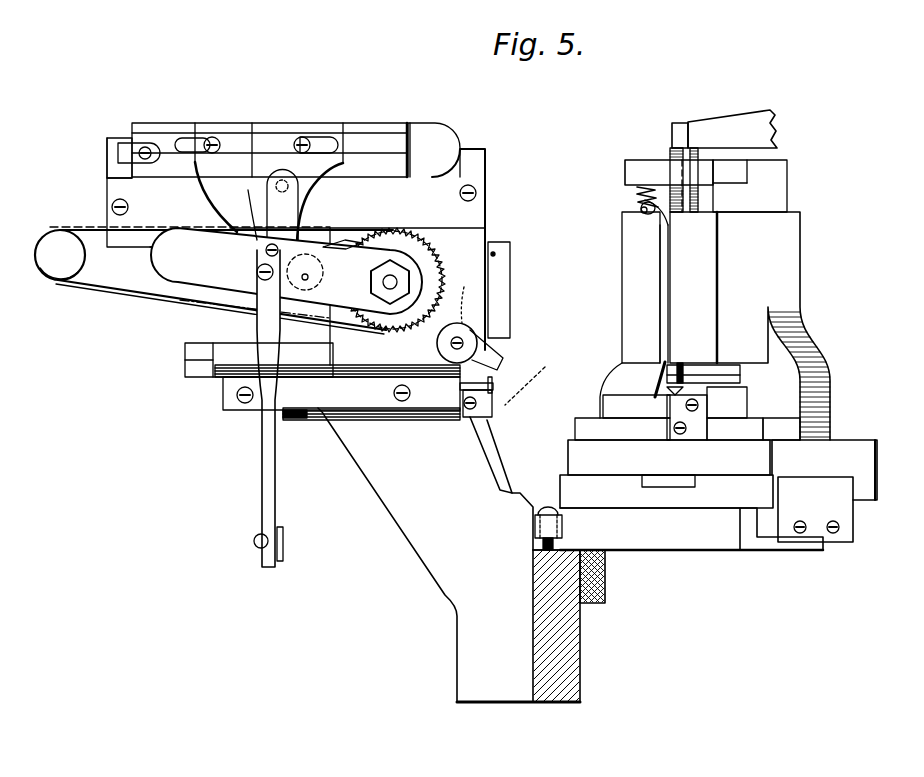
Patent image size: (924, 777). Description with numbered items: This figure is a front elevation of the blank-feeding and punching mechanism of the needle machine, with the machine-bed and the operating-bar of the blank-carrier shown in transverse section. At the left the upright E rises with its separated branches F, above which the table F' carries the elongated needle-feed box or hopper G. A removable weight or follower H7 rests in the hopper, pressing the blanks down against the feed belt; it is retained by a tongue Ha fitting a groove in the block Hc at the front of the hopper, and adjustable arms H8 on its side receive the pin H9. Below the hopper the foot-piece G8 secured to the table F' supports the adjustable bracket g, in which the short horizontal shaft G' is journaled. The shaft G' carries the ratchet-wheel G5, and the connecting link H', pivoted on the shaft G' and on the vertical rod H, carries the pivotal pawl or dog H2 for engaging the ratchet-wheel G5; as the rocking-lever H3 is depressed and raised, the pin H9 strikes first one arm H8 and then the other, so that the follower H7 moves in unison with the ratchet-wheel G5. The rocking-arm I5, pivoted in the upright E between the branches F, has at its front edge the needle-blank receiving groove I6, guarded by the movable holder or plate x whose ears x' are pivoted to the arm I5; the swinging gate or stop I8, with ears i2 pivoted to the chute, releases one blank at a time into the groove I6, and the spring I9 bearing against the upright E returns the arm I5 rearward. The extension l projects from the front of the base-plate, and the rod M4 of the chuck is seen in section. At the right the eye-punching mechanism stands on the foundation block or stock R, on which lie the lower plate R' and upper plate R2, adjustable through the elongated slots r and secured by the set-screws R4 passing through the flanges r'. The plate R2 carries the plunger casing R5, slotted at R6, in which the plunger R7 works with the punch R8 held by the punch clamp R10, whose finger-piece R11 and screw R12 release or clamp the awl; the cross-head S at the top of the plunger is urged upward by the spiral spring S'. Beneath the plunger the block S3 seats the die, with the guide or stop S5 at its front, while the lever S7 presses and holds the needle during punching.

The ratchet-wheel G5 is at (430, 262).
The needle-feed box or hopper G is at (267, 251).
The removable weight or follower H7 is at (367, 135).
The arms H8 is at (220, 138).
The pin H9 is at (282, 180).
The tongue Ha is at (412, 150).
The block Hc is at (434, 150).
The connecting-piece or link H' is at (286, 271).
The short horizontal shaft G' is at (398, 253).
The pivotal pawl or dog H2 is at (340, 245).
The vertical rod H is at (256, 378).
The rocking-lever H3 is at (283, 545).
The bracket g is at (322, 380).
The ears i2 is at (483, 290).
The swinging gate or stop I8 is at (490, 352).
The rocking-arm I5 is at (493, 377).
The movable holder or plate x is at (528, 381).
The ears x' is at (517, 415).
The needle-blank receiving groove I6 is at (494, 388).
The spring I9 is at (494, 449).
The upright E is at (449, 555).
The branches F is at (409, 471).
The table F' is at (326, 443).
The foot-piece G8 is at (375, 378).
The extension l is at (581, 652).
The longitudinally movable rod M4 is at (606, 580).
The foundation block or stock R is at (678, 529).
The slots r is at (766, 564).
The lower plate R' is at (666, 491).
The upper plate R2 is at (722, 470).
The downwardly extending flanges r' is at (880, 485).
The set-screws R4 is at (840, 527).
The block S3 is at (622, 429).
The guide or stop S5 is at (672, 406).
The punch R8 is at (662, 372).
The punch clamp R10 is at (660, 336).
The finger-piece R11 is at (660, 228).
The screw R12 is at (642, 212).
The spiral spring S' is at (625, 196).
The slot R6 is at (672, 300).
The lever S7 is at (732, 365).
The plunger casing R5 is at (774, 326).
The cross-head S is at (706, 186).
The plunger R7 is at (699, 197).
The arm T is at (724, 129).